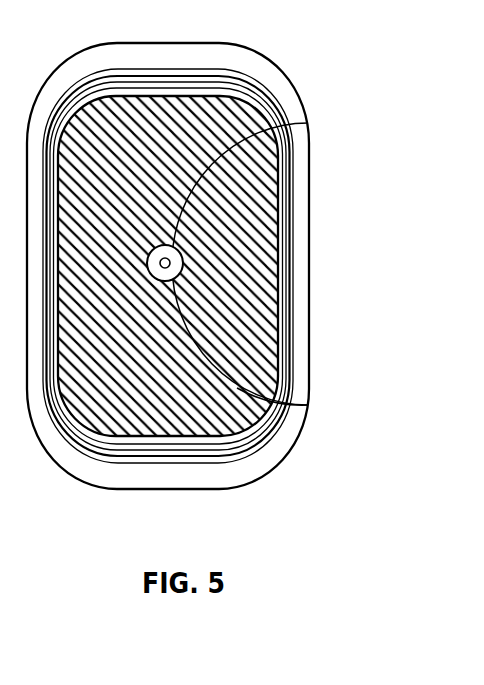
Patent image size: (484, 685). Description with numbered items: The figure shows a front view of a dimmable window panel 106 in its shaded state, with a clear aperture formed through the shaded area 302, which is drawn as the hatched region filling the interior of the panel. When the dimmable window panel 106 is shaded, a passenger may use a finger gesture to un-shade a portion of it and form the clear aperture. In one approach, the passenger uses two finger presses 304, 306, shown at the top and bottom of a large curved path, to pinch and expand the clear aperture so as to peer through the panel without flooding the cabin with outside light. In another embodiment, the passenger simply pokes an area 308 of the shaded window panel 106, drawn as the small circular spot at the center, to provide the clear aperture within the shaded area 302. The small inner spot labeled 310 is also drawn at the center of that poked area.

The dimmable window panel 106 is at (257, 41).
The shaded area 302 is at (243, 322).
The finger press 304 is at (308, 123).
The finger press 306 is at (308, 405).
The poked area 308 is at (179, 251).
The inner aperture 310 is at (170, 265).